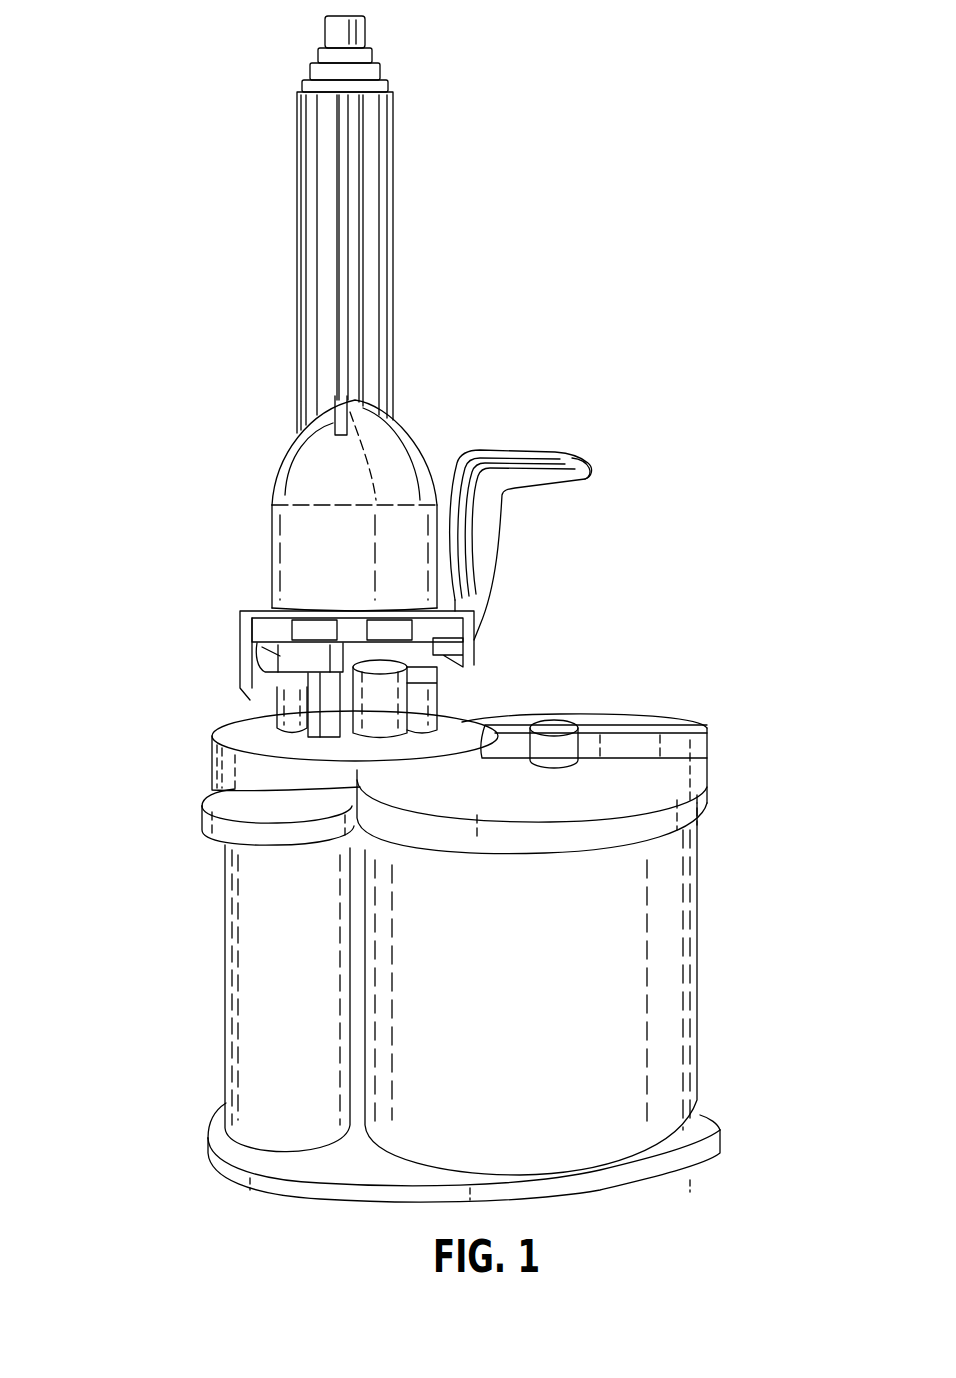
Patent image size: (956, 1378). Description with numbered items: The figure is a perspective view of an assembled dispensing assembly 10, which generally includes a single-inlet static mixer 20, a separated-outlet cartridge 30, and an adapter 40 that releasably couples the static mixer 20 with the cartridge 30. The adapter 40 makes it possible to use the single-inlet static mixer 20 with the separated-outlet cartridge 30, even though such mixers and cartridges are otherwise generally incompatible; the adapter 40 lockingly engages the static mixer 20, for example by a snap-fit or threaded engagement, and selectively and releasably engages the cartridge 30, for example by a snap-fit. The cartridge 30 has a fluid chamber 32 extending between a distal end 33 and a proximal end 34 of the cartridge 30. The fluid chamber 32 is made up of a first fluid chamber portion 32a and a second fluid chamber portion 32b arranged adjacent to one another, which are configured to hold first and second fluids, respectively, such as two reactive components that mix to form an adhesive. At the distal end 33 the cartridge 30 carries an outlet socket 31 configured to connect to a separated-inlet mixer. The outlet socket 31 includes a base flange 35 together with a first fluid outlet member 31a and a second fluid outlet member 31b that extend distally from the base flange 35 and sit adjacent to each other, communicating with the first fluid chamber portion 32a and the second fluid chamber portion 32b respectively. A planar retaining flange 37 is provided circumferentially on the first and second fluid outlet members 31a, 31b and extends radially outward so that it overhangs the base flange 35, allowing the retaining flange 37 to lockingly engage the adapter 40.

The dispensing assembly 10 is at (143, 108).
The single-inlet static mixer 20 is at (391, 302).
The separated-outlet cartridge 30 is at (700, 918).
The outlet socket 31 is at (354, 503).
The first fluid outlet member 31a is at (292, 705).
The second fluid outlet member 31b is at (450, 698).
The fluid chamber 32 is at (227, 959).
The first fluid chamber portion 32a is at (273, 1053).
The second fluid chamber portion 32b is at (678, 1048).
The distal end 33 is at (652, 773).
The proximal end 34 is at (687, 1173).
The base flange 35 is at (252, 735).
The retaining flange 37 is at (273, 662).
The adapter 40 is at (500, 557).